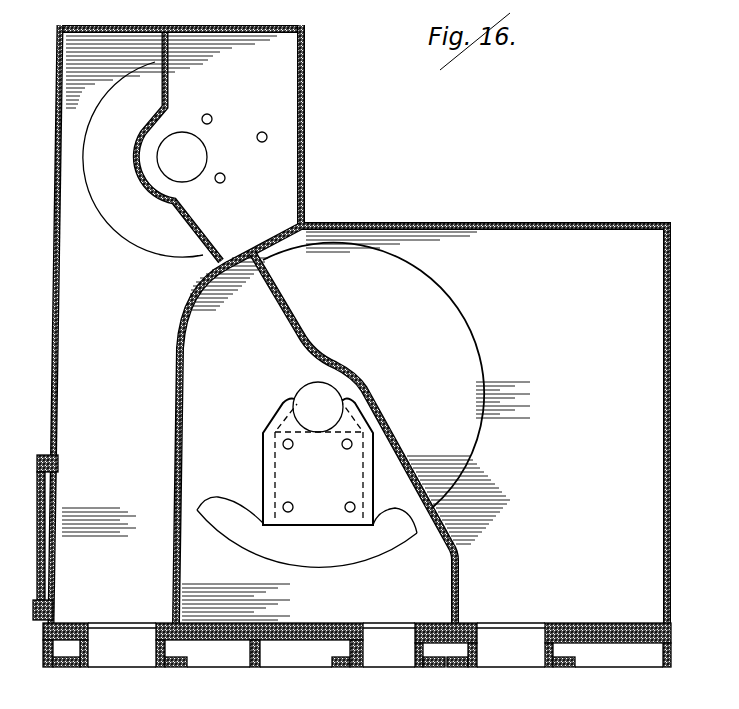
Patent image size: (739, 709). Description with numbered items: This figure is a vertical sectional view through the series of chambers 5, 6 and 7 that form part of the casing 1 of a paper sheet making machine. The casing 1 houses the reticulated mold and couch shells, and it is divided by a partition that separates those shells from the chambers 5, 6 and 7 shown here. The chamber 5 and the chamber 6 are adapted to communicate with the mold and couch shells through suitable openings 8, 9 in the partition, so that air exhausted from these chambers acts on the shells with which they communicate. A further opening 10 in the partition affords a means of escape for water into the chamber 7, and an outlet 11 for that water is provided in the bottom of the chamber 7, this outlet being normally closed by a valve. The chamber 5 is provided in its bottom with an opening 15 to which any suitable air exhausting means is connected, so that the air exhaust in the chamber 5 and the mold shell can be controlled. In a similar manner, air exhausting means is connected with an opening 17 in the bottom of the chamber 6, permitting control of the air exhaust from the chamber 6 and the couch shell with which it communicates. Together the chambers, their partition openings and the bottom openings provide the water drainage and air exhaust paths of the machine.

The casing 1 is at (594, 340).
The chamber 5 is at (372, 424).
The chamber 6 is at (169, 324).
The chamber 7 is at (307, 548).
The opening 8 is at (307, 333).
The opening 9 is at (132, 160).
The opening 10 is at (313, 527).
The outlet 11 is at (285, 645).
The opening 15 is at (543, 645).
The opening 17 is at (99, 645).